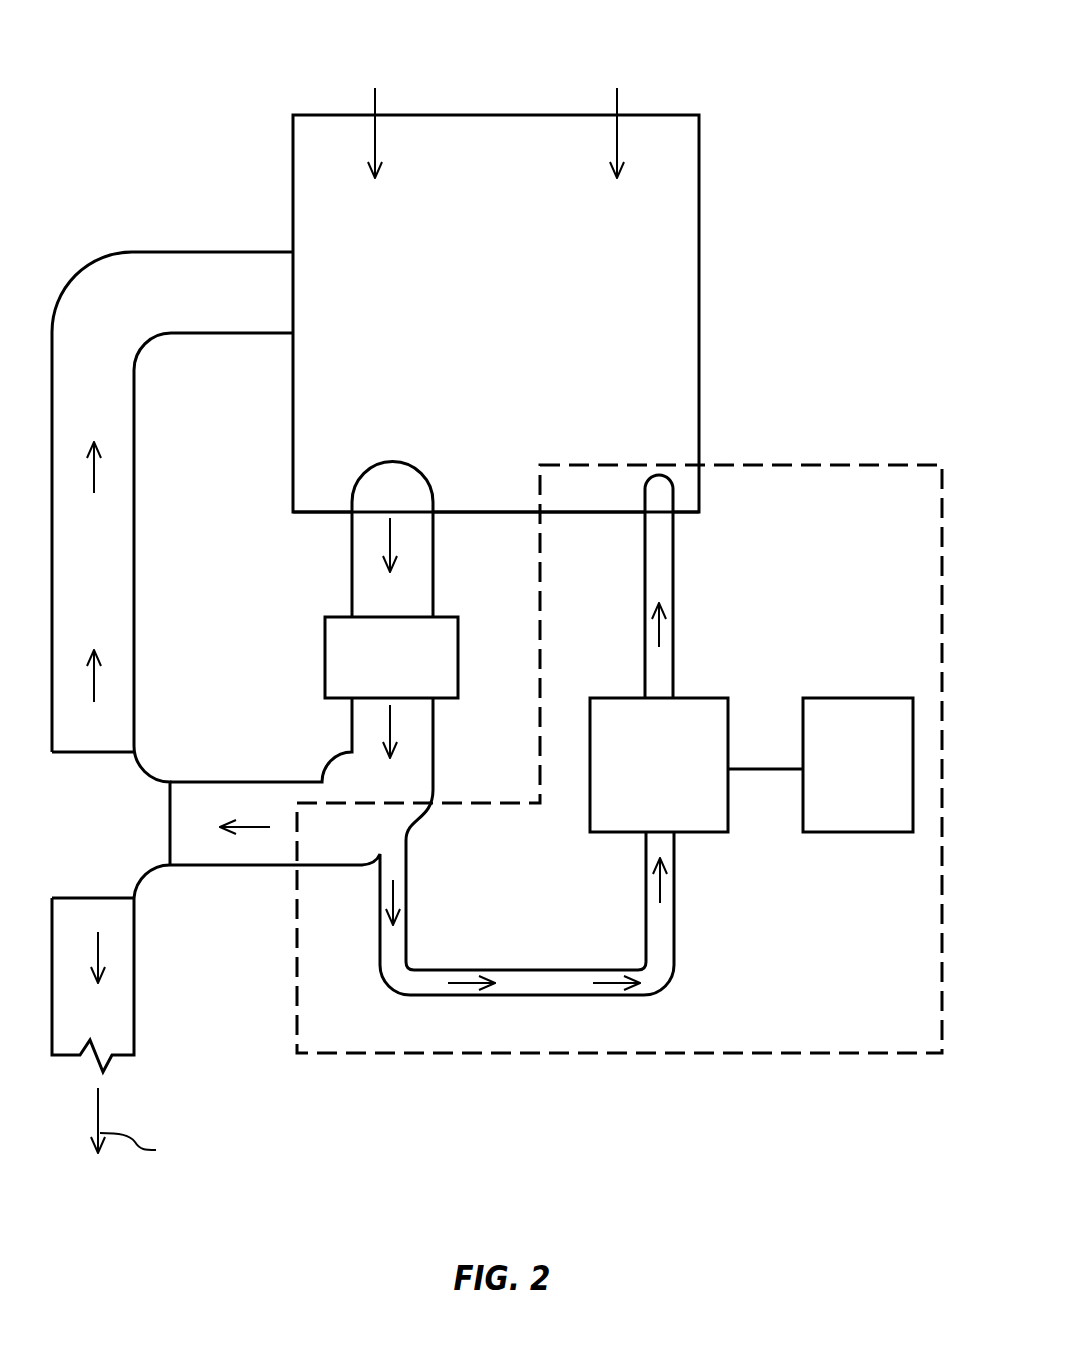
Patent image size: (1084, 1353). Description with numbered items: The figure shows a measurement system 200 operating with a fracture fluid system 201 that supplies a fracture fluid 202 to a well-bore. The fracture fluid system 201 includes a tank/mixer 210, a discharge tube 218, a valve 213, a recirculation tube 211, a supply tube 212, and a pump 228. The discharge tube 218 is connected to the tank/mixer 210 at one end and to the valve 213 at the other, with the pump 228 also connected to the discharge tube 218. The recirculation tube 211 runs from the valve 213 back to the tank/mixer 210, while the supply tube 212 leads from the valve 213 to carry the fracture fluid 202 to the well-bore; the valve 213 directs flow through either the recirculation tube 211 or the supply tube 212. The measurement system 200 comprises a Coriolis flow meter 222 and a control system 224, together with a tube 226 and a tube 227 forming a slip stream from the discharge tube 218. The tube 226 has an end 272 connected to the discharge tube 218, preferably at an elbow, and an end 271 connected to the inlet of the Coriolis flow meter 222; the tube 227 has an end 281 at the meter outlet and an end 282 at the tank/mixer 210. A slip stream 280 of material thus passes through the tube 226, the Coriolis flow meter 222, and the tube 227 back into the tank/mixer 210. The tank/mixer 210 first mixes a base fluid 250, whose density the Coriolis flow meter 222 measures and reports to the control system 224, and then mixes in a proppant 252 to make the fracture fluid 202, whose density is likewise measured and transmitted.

The measurement system 200 is at (828, 567).
The fracture fluid system 201 is at (148, 138).
The fracture fluid 202 is at (187, 1217).
The tank/mixer 210 is at (477, 302).
The recirculation tube 211 is at (135, 590).
The supply tube 212 is at (140, 938).
The valve 213 is at (83, 853).
The discharge tube 218 is at (472, 735).
The Coriolis flow meter 222 is at (640, 822).
The control system 224 is at (840, 822).
The tube 226 is at (542, 997).
The tube 227 is at (673, 598).
The pump 228 is at (372, 687).
The base fluid 250 is at (357, 73).
The proppant 252 is at (597, 73).
The end of tube 271 is at (626, 845).
The end of tube 272 is at (446, 847).
The slip stream 280 is at (675, 882).
The end of tube 281 is at (633, 683).
The end of tube 282 is at (657, 466).